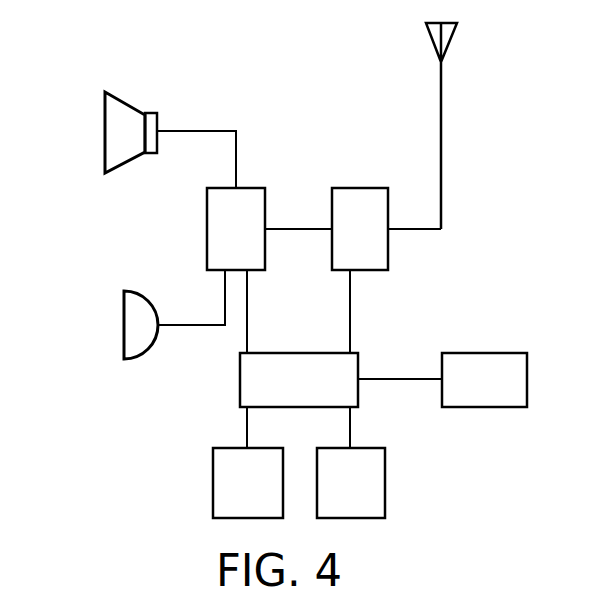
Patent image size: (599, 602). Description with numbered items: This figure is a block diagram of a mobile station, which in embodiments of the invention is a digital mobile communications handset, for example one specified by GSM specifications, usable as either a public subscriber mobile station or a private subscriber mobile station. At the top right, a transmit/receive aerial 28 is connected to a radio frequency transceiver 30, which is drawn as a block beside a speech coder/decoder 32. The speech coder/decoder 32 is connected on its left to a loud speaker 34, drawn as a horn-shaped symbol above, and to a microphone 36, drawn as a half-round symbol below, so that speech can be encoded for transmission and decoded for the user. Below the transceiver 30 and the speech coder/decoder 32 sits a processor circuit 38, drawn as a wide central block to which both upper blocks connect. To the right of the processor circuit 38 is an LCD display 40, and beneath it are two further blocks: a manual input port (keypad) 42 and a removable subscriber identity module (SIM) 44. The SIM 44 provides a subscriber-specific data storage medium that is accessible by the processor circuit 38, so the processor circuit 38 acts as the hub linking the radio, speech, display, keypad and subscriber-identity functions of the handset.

The transmit/receive aerial 28 is at (442, 98).
The radio frequency transceiver 30 is at (357, 188).
The speech coder/decoder 32 is at (207, 228).
The loud speaker 34 is at (105, 130).
The microphone 36 is at (124, 324).
The processor circuit 38 is at (240, 376).
The LCD display 40 is at (474, 353).
The manual input port (keypad) 42 is at (385, 482).
The removable subscriber identity module (SIM) 44 is at (213, 480).